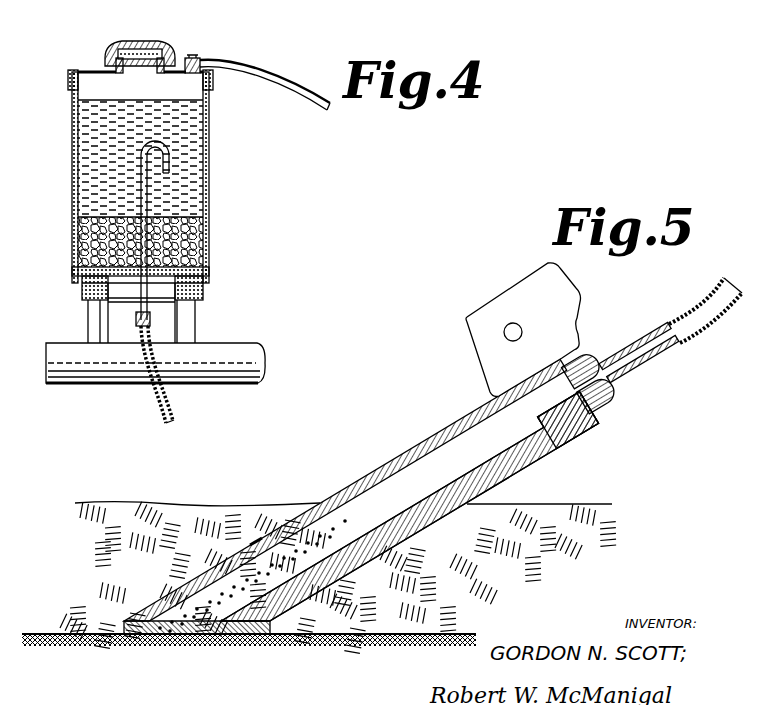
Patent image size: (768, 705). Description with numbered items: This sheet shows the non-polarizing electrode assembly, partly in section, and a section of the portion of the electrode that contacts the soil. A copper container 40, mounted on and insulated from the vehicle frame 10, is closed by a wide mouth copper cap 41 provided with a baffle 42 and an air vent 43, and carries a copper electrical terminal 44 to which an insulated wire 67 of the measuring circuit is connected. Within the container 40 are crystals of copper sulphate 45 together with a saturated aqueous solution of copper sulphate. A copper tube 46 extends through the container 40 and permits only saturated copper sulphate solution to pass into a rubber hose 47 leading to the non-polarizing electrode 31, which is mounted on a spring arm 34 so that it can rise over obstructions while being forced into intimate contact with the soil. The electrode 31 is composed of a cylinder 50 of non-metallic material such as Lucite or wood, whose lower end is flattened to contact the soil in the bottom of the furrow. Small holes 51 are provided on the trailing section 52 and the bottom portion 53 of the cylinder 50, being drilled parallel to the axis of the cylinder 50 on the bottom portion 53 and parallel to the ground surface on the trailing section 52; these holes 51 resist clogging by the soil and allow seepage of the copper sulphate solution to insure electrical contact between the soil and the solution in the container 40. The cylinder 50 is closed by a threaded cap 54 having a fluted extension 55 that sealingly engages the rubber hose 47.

In FIG. 4, the frame 10 is at (232, 341).
In FIG. 5, the non-polarizing electrode 31 is at (422, 443).
In FIG. 5, the spring arm 34 is at (547, 292).
In FIG. 4, the copper container 40 is at (212, 203).
In FIG. 4, the copper cap 41 is at (113, 44).
In FIG. 4, the baffle 42 is at (147, 62).
In FIG. 4, the air vent 43 is at (140, 40).
In FIG. 4, the electrical terminal 44 is at (197, 60).
In FIG. 4, the copper sulphate crystals 45 is at (78, 232).
In FIG. 4, the copper tube 46 is at (140, 171).
In FIG. 4, the rubber hose 47 is at (158, 408).
In FIG. 5, the rubber hose 47 is at (704, 290).
In FIG. 5, the cylinder 50 is at (368, 484).
In FIG. 5, the small holes 51 is at (328, 502).
In FIG. 5, the trailing section 52 is at (251, 547).
In FIG. 5, the bottom portion 53 is at (131, 636).
In FIG. 5, the threaded cap 54 is at (593, 350).
In FIG. 5, the fluted extension 55 is at (643, 330).
In FIG. 4, the insulated wire 67 is at (278, 87).